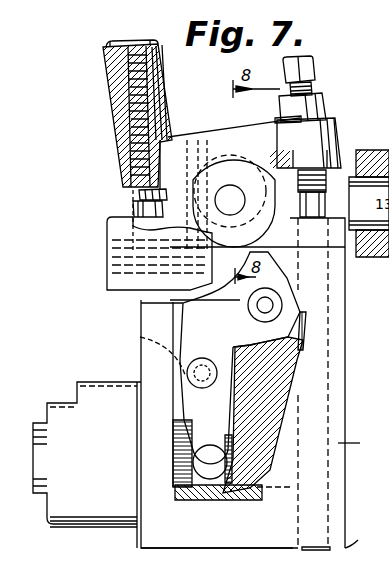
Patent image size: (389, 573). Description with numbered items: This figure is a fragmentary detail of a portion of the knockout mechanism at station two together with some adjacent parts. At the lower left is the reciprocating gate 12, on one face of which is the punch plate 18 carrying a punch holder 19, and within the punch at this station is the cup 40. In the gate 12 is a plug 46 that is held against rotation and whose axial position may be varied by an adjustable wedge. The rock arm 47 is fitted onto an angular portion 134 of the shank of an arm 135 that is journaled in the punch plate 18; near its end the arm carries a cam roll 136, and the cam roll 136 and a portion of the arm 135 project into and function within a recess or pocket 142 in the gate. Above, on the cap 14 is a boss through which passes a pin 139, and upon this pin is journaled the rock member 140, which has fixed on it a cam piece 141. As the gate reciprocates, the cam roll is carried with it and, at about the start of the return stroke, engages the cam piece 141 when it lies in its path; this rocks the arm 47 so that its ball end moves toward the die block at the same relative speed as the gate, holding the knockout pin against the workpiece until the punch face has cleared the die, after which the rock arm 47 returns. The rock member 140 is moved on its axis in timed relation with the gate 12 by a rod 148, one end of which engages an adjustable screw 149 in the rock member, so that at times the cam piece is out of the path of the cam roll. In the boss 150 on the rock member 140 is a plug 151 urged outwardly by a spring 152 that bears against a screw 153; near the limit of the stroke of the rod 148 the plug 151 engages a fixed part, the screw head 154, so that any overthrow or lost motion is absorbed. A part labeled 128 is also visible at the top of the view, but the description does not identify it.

The casing 128 is at (109, 5).
The boss 150 is at (105, 96).
The spring 152 is at (106, 80).
The screw 153 is at (104, 44).
The plug 151 is at (138, 196).
The screw head 154 is at (133, 208).
The cam piece 141 is at (160, 282).
The pin 139 is at (241, 207).
The adjustable screw 149 is at (313, 69).
The rock member 140 is at (333, 114).
The rod 148 is at (335, 162).
The cap 14 is at (337, 216).
The cam roll 136 is at (283, 290).
The arm 135 is at (175, 305).
The angular portion 134 is at (140, 337).
The rock arm 47 is at (180, 418).
The cup 40 is at (180, 450).
The plug 46 is at (223, 488).
The recess or pocket 142 is at (285, 338).
The punch holder 19 is at (60, 403).
The gate 12 is at (358, 453).
The punch plate 18 is at (209, 539).